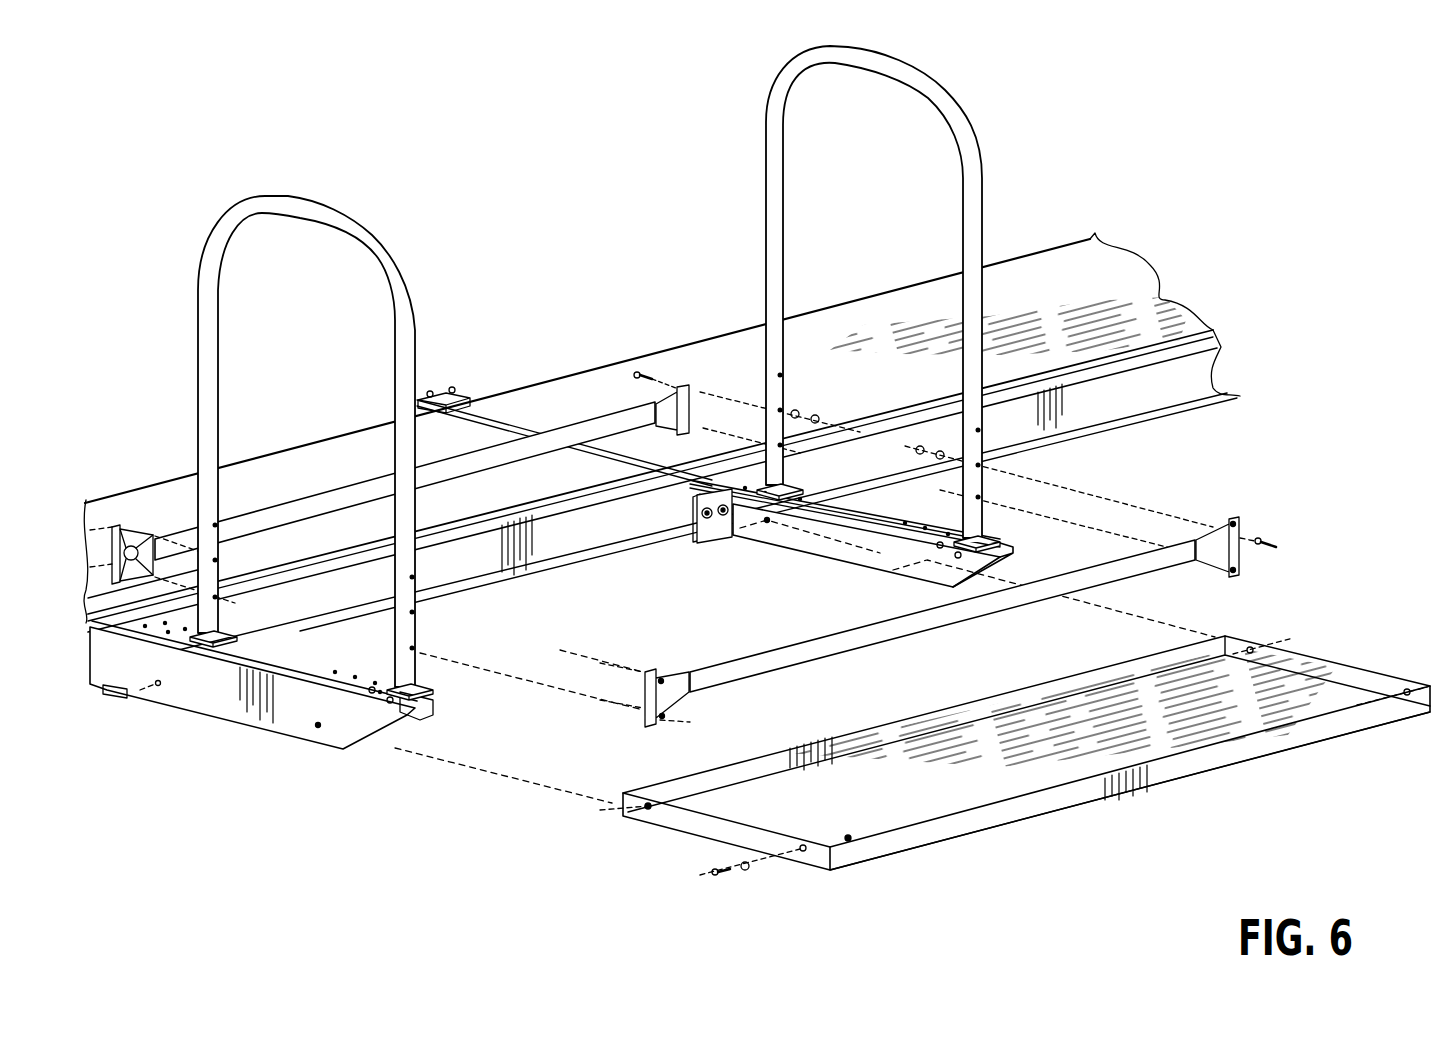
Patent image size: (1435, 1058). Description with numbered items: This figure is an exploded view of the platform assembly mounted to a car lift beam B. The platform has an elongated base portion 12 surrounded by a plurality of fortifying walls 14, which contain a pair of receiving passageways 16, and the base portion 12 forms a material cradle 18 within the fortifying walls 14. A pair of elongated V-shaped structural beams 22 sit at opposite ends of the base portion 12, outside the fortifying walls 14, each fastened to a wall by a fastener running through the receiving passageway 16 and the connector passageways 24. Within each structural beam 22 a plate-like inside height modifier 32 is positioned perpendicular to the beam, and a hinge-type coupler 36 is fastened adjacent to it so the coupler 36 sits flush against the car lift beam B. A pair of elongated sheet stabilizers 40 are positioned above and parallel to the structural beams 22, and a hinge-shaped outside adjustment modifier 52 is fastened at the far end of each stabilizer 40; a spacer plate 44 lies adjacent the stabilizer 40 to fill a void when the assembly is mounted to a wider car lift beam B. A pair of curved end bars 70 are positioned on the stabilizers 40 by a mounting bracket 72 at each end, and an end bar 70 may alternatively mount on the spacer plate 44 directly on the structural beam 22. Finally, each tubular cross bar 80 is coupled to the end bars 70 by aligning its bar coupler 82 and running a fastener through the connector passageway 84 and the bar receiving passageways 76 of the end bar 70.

The car lift beam B is at (1054, 268).
The base portion 12 is at (750, 783).
The fortifying walls 14 is at (1045, 808).
The receiving passageways 16 is at (1385, 640).
The material cradle 18 is at (1210, 735).
The structural beams 22 is at (290, 680).
The connector passageways 24 is at (318, 728).
The inside height modifier 32 is at (714, 480).
The coupler 36 is at (120, 700).
The stabilizers 40 is at (520, 410).
The spacer plate 44 is at (440, 700).
The outside adjustment modifier 52 is at (440, 392).
The end bars 70 is at (306, 200).
The mounting bracket 72 is at (196, 648).
The bar receiving passageways 76 is at (985, 500).
The cross bars 80 is at (600, 410).
The bar coupler 82 is at (133, 524).
The connector passageways 84 is at (1258, 565).